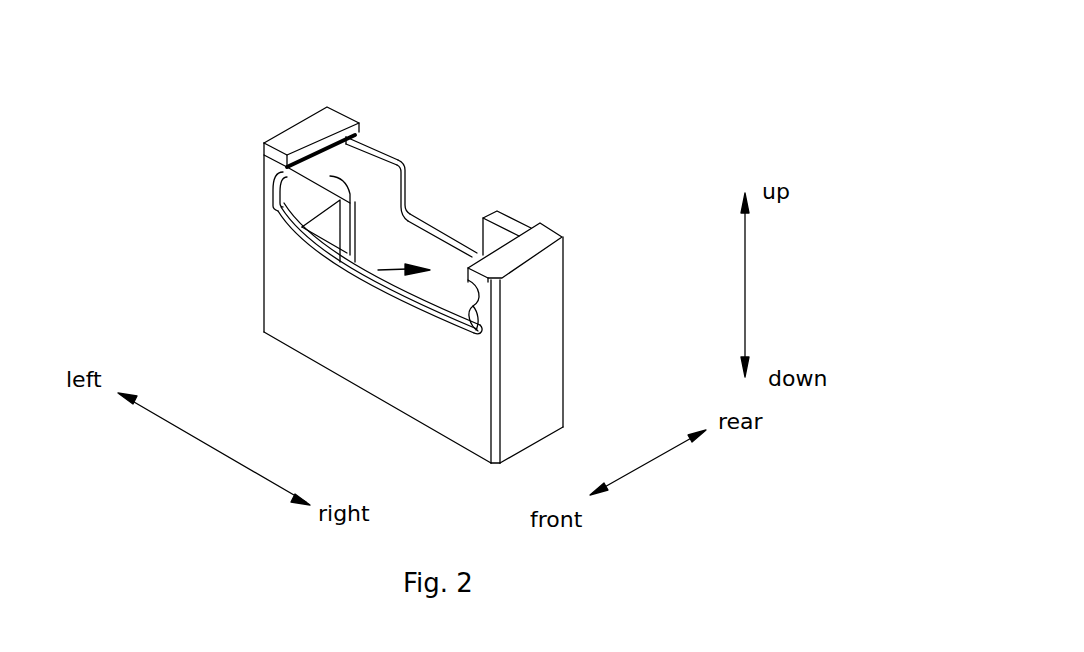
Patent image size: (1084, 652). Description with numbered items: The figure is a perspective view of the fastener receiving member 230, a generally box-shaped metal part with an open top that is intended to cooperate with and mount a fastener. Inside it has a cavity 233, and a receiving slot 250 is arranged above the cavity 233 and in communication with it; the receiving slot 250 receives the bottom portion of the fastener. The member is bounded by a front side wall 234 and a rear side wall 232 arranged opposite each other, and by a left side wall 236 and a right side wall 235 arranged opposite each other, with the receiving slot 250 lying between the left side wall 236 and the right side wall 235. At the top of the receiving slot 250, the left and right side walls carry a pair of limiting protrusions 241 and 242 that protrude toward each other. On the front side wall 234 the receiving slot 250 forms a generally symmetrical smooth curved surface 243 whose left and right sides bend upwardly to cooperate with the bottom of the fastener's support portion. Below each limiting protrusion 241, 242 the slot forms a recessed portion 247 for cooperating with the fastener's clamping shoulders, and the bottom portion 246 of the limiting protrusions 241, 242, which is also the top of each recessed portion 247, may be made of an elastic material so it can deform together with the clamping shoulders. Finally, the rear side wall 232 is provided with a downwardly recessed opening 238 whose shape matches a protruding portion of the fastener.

The fastener receiving member 230 is at (718, 117).
The rear side wall 232 is at (374, 168).
The cavity 233 is at (378, 270).
The front side wall 234 is at (302, 336).
The right side wall 235 is at (537, 423).
The left side wall 236 is at (320, 177).
The opening 238 is at (443, 242).
The limiting protrusion 241 is at (277, 168).
The limiting protrusion 242 is at (502, 262).
The curved surface 243 is at (293, 257).
The bottom portion of the limiting protrusions 246 is at (287, 198).
The recessed portion 247 is at (285, 226).
The receiving slot 250 is at (332, 272).